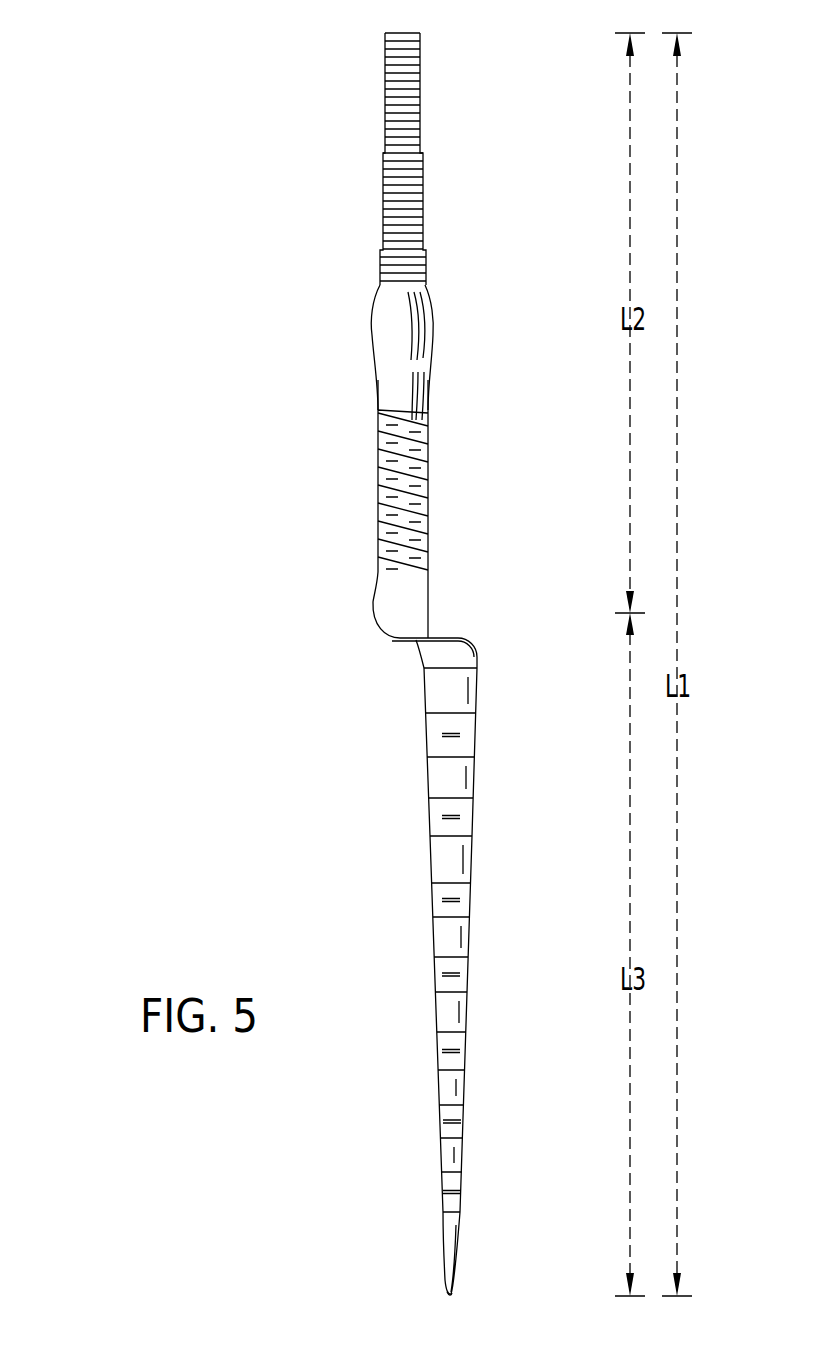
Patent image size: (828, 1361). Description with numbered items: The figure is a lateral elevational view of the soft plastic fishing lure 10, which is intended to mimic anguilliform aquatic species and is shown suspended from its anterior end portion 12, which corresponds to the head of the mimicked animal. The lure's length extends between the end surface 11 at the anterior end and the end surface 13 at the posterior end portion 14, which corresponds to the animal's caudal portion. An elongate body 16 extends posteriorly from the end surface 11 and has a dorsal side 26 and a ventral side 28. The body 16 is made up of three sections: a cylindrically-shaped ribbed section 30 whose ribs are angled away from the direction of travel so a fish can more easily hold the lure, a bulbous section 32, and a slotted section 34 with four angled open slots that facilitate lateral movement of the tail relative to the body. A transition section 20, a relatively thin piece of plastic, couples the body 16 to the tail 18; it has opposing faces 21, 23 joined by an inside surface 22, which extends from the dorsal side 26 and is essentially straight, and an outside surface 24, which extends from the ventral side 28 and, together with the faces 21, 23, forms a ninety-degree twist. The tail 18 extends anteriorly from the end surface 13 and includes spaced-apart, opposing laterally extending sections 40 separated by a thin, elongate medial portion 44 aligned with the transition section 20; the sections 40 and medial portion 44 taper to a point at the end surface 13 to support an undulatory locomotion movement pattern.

The soft plastic fishing lure 10 is at (130, 196).
The end surface 11 is at (398, 33).
The anterior end portion 12 is at (446, 38).
The ribbed section 30 is at (423, 163).
The elongate body 16 is at (472, 289).
The bulbous section 32 is at (385, 320).
The dorsal side 26 is at (431, 387).
The ventral side 28 is at (378, 388).
The slotted section 34 is at (380, 459).
The transition section 20 is at (472, 616).
The opposing face 21 is at (388, 590).
The inside surface 22 is at (430, 597).
The outside surface 24 is at (468, 637).
The opposing face 23 is at (438, 655).
The tail 18 is at (489, 901).
The laterally extending sections 40 is at (440, 857).
The medial portion 44 is at (448, 906).
The posterior end portion 14 is at (481, 1288).
The end surface 13 is at (450, 1296).